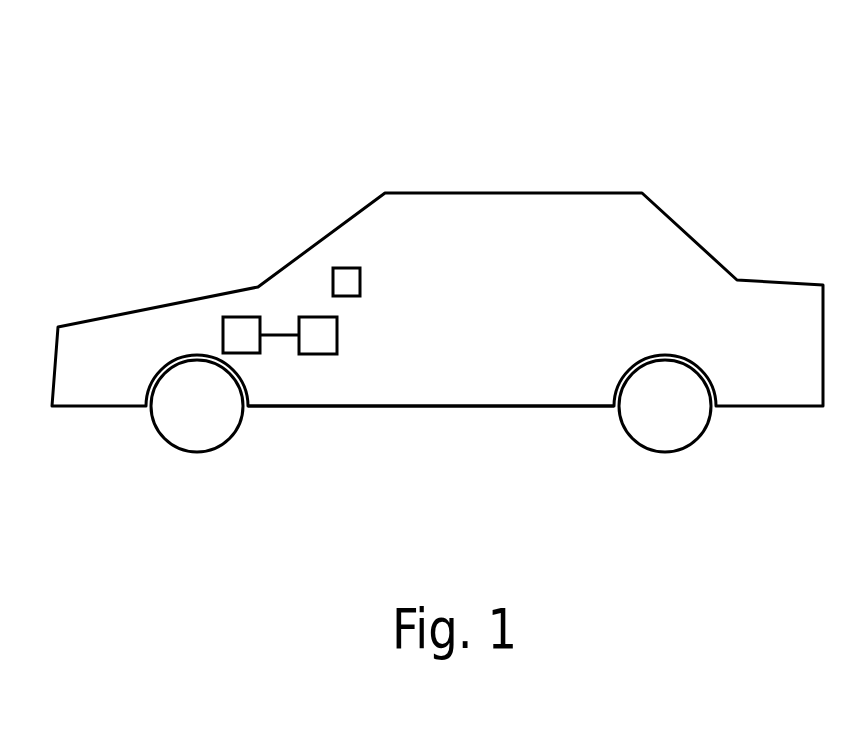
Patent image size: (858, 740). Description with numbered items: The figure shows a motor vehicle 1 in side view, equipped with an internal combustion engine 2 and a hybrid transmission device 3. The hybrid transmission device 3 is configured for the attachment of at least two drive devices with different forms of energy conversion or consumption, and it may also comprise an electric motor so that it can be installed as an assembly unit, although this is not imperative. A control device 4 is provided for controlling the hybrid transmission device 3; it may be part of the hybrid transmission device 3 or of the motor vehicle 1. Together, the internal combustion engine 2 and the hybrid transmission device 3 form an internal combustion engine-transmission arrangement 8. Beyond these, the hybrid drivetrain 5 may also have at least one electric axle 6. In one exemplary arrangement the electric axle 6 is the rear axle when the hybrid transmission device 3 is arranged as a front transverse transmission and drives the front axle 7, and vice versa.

The motor vehicle 1 is at (263, 112).
The internal combustion engine 2 is at (240, 333).
The hybrid transmission device 3 is at (318, 334).
The control device 4 is at (344, 268).
The hybrid drivetrain 5 is at (365, 472).
The electric axle 6 is at (715, 410).
The front axle 7 is at (147, 417).
The internal combustion engine-transmission arrangement 8 is at (273, 495).